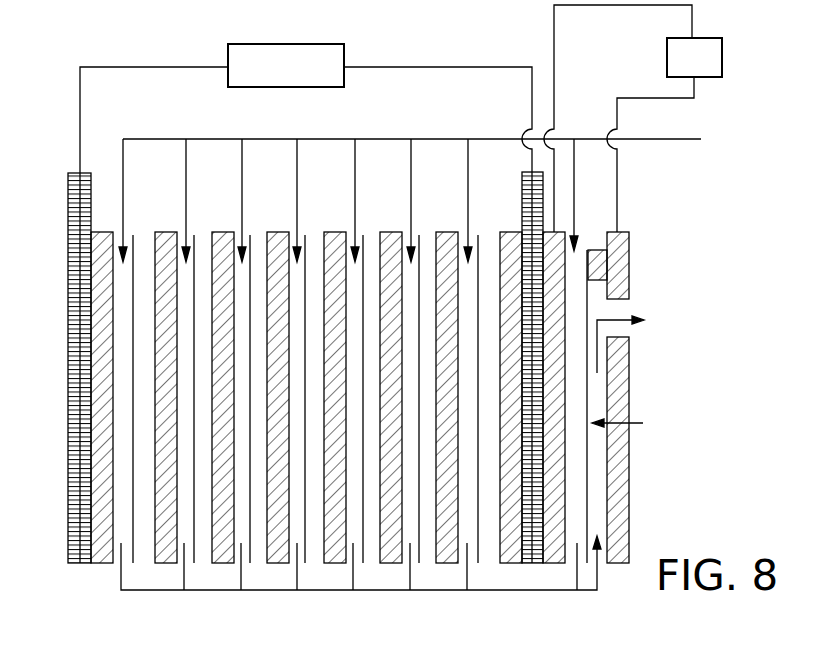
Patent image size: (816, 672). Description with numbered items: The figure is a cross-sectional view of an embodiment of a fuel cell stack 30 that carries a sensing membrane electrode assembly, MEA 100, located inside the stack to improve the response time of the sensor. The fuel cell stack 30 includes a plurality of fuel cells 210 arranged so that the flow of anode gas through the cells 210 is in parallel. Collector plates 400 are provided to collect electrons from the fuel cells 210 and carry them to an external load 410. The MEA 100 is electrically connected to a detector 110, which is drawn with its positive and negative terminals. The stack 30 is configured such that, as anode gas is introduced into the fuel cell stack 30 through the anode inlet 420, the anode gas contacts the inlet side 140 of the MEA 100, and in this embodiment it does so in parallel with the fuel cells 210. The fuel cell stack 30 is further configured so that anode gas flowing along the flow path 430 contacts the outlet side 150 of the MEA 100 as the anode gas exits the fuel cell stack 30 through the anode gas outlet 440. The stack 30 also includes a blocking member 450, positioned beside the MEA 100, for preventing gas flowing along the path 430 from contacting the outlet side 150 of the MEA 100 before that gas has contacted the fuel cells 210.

The fuel cell stack 30 is at (56, 632).
The MEA 100 is at (587, 452).
The detector 110 is at (711, 71).
The inlet side 140 is at (586, 266).
The outlet side 150 is at (636, 423).
The fuel cells 210 is at (273, 563).
The collector plates 400 is at (69, 176).
The external load 410 is at (268, 79).
The anode inlet 420 is at (618, 133).
The flow path 430 is at (441, 139).
The anode gas outlet 440 is at (621, 332).
The blocking member 450 is at (611, 268).